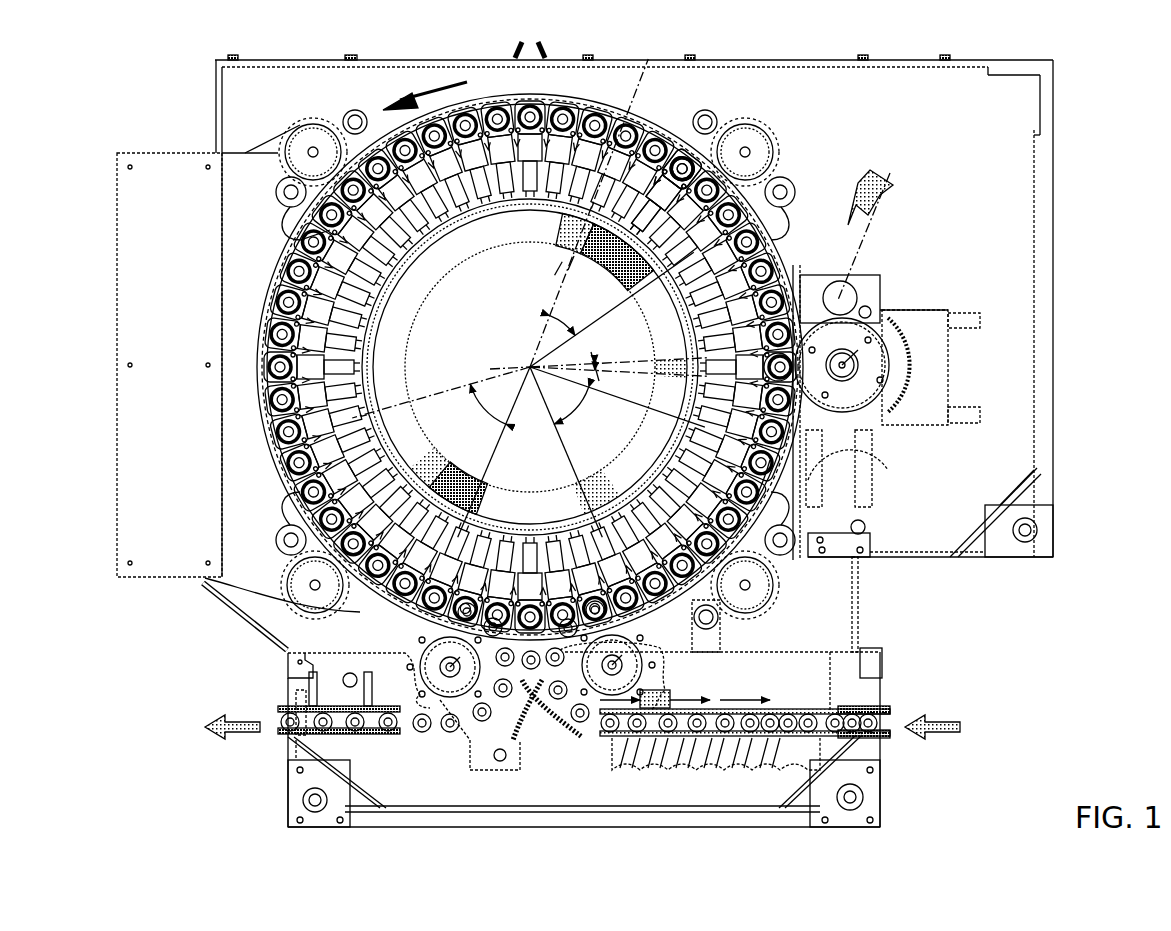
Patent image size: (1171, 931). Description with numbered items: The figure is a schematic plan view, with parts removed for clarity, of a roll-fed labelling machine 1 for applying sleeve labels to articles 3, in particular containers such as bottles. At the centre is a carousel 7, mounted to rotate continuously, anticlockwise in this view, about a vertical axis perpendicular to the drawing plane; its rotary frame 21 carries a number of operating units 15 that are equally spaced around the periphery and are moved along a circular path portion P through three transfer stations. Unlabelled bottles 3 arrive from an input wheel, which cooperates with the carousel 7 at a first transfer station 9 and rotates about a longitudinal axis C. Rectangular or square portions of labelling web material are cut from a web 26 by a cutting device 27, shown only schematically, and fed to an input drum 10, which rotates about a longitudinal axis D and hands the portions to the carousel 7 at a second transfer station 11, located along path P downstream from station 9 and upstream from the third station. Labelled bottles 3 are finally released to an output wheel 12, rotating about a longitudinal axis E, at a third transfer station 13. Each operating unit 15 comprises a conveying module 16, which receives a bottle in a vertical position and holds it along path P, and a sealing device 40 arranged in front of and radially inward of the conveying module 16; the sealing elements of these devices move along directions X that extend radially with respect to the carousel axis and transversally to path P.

The labelling machine 1 is at (1098, 112).
The carousel 7 is at (252, 317).
The sealing device 40 is at (652, 200).
The web 26 is at (850, 238).
The cutting device 27 is at (860, 285).
The longitudinal axis D is at (880, 320).
The input drum 10 is at (896, 332).
The second transfer station 11 is at (805, 370).
The operating unit 15 is at (806, 440).
The conveying module 16 is at (780, 474).
The third transfer station 13 is at (452, 624).
The longitudinal axis E is at (432, 692).
The output wheel 12 is at (446, 705).
The rotary frame 21 is at (531, 632).
The first transfer station 9 is at (616, 620).
The longitudinal axis C is at (668, 667).
The articles 3 is at (697, 740).
The circular path portion P is at (435, 84).
The direction X is at (645, 68).